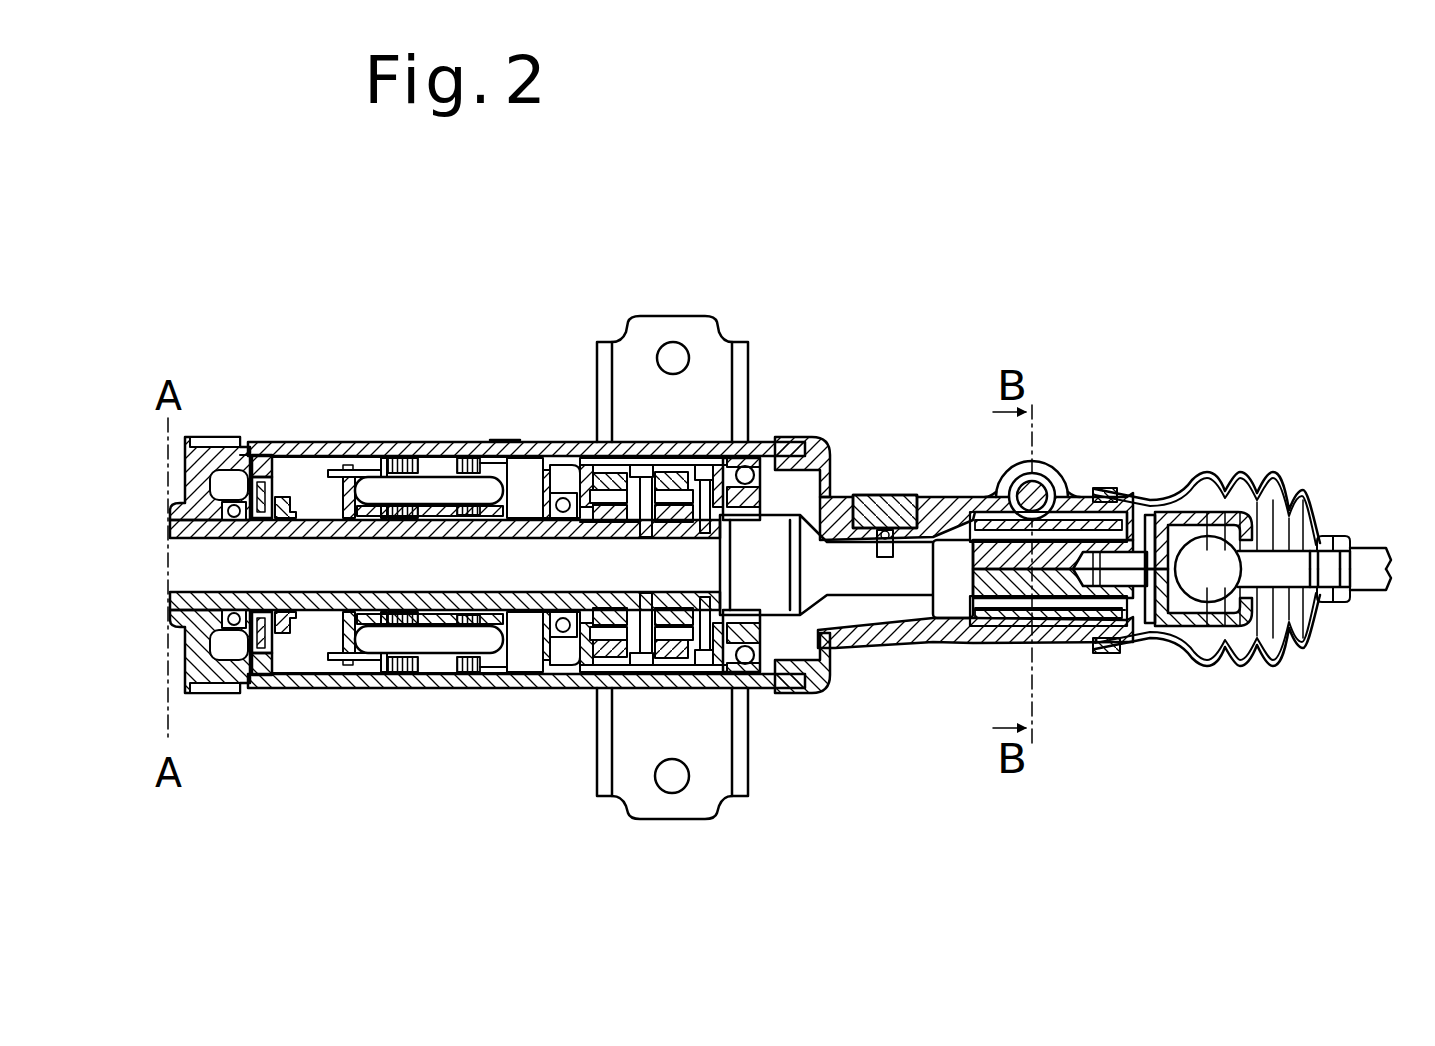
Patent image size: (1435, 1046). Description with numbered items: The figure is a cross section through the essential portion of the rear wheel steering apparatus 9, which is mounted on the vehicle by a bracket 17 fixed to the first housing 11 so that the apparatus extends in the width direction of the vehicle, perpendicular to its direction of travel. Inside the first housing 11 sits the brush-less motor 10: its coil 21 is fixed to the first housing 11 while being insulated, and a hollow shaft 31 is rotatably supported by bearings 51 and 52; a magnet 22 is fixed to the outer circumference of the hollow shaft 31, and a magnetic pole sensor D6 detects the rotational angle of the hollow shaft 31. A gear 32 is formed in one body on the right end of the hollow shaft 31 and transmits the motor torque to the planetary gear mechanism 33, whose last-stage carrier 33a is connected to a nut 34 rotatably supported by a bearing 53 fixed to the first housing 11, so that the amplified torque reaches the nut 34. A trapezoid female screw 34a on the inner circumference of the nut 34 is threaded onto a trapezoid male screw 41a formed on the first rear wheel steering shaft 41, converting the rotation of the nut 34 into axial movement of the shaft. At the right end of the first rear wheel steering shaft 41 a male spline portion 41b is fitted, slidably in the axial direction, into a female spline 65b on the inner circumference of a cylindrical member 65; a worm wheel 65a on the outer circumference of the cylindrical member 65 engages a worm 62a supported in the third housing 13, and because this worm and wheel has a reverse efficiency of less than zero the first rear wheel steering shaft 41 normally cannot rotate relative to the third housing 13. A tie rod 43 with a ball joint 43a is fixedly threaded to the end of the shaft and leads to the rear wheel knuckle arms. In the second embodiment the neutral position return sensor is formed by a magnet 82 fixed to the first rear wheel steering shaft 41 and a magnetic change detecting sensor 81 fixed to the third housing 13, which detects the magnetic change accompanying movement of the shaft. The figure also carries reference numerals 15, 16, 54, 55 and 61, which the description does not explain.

The rear wheel steering apparatus 9 is at (496, 437).
The brush-less motor 10 is at (447, 451).
The first housing 11 is at (279, 485).
The third housing 13 is at (926, 497).
The seal 15 is at (230, 440).
The end plate 16 is at (800, 452).
The bracket 17 is at (738, 783).
The coil 21 is at (432, 485).
The magnet 22 is at (412, 470).
The hollow shaft 31 is at (312, 468).
The gear 32 is at (607, 600).
The planetary gear mechanism 33 is at (645, 480).
The carrier 33a is at (695, 480).
The nut 34 is at (800, 500).
The trapezoid female screw 34a is at (720, 490).
The first rear wheel steering shaft 41 is at (322, 585).
The trapezoid male screw 41a is at (792, 620).
The male spline portion 41b is at (1077, 622).
The tie rod 43 is at (1362, 590).
The ball joint 43a is at (1223, 552).
The bearing 51 is at (566, 483).
The bearing 52 is at (248, 690).
The bearing 53 is at (768, 470).
The coupling 54 is at (976, 620).
The retaining clip 55 is at (1127, 652).
The pivot boss 61 is at (1001, 457).
The worm 62a is at (1042, 473).
The cylindrical member 65 is at (1105, 500).
The worm wheel 65a is at (1095, 488).
The female spline 65b is at (967, 615).
The magnetic change detecting sensor 81 is at (880, 493).
The magnet 82 is at (870, 560).
The magnetic pole sensor D6 is at (295, 457).